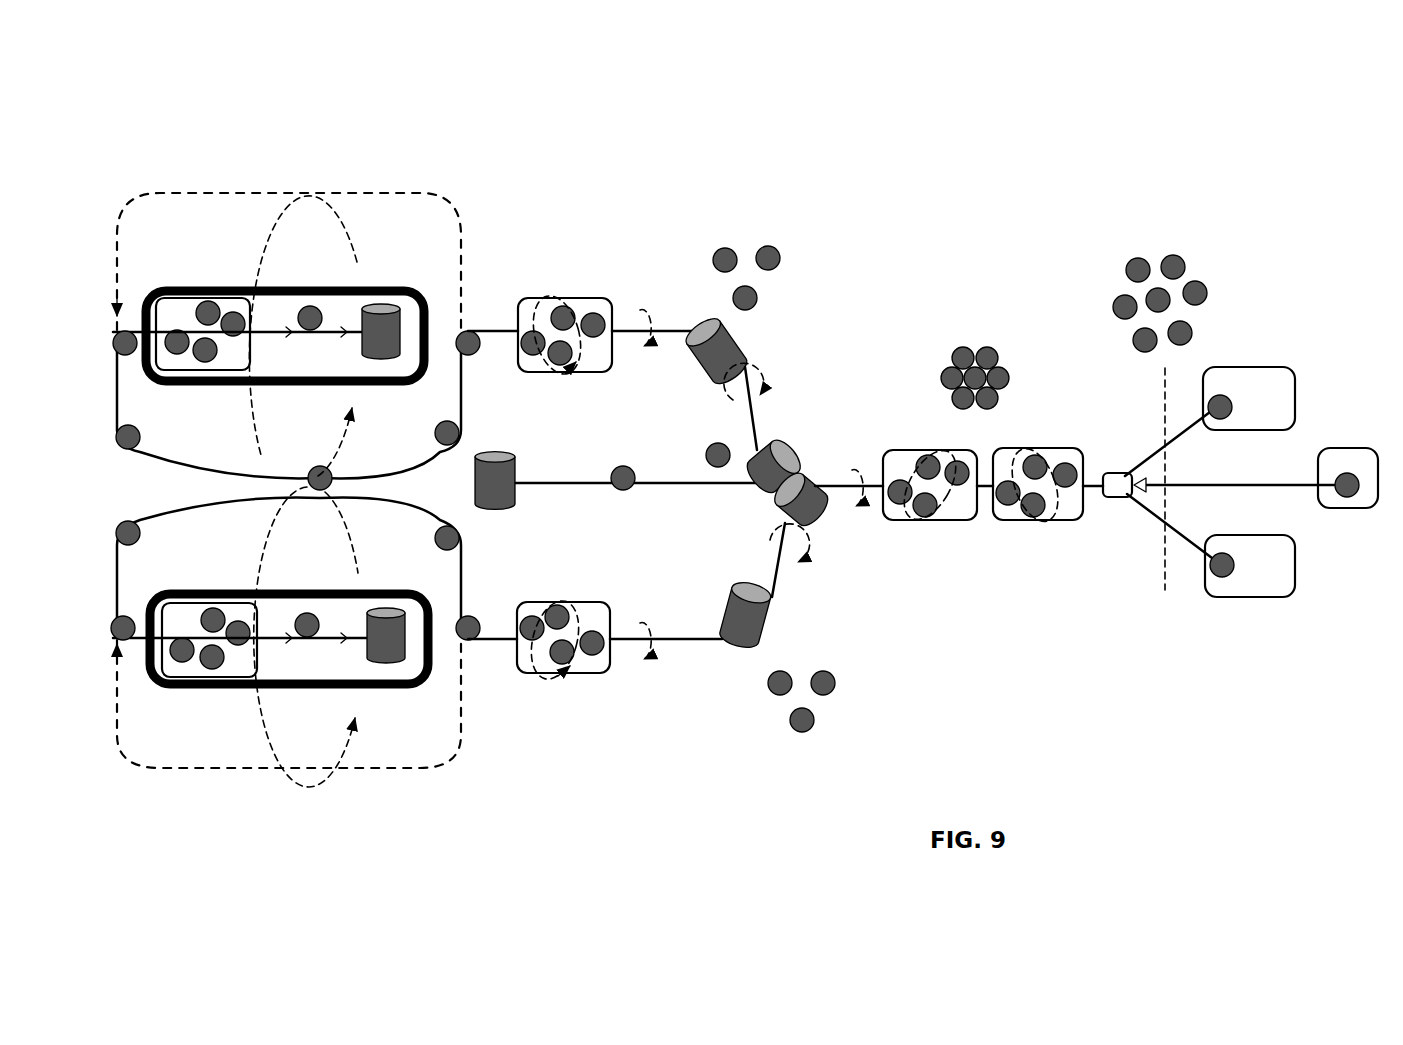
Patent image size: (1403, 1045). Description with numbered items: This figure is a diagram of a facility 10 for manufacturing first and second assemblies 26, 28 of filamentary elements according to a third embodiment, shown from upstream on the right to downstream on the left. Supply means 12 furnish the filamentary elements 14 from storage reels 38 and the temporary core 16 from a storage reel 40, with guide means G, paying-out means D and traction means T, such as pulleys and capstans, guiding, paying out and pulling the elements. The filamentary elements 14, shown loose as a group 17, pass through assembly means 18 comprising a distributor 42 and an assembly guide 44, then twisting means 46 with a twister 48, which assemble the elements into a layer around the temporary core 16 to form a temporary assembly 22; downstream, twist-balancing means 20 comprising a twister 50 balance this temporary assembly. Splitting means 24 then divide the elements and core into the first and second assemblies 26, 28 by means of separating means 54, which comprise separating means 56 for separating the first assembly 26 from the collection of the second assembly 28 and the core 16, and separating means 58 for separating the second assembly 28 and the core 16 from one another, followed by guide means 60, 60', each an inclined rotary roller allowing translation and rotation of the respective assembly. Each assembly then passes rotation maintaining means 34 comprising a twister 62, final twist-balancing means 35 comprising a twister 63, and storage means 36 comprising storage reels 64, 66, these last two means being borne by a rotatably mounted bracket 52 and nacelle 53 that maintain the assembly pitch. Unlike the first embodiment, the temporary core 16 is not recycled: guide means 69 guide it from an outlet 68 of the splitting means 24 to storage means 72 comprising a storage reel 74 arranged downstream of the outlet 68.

The facility 10 is at (858, 218).
The supply means 12 is at (1332, 408).
The filamentary elements 14 is at (768, 246).
The temporary core 16 is at (578, 478).
The group of balls 17 is at (1146, 293).
The assembly means 18 is at (233, 253).
The twist-balancing means 20 is at (907, 537).
The temporary assembly 22 is at (958, 330).
The splitting means 24 is at (835, 458).
The first assembly 26 is at (672, 642).
The second assembly 28 is at (672, 330).
The rotation maintaining means 34 is at (625, 280).
The twist-balancing means 35 is at (188, 278).
The storage means 36 is at (408, 313).
The storage reels 38 is at (1232, 400).
The storage reel 40 is at (1347, 498).
The distributor 42 is at (1165, 590).
The assembly guide 44 is at (1120, 497).
The twisting means 46 is at (1002, 527).
The twister 48 is at (1045, 520).
The twister 50 is at (930, 523).
The bracket 52 is at (263, 458).
The nacelle 53 is at (283, 287).
The separating means 54 is at (750, 505).
The separating means 56 is at (838, 563).
The separating means 58 is at (818, 423).
The guide means 60 is at (793, 590).
The guide means 60' is at (767, 367).
The twister 62 is at (583, 298).
The twister 63 is at (163, 382).
The storage reel 64 is at (372, 665).
The storage reel 66 is at (368, 302).
The outlet 68 is at (714, 462).
The guide means 69 is at (737, 492).
The storage means 72 is at (488, 448).
The storage reel 74 is at (512, 508).
The traction means T is at (310, 312).
The guide means G is at (125, 331).
The paying-out means D is at (1225, 395).